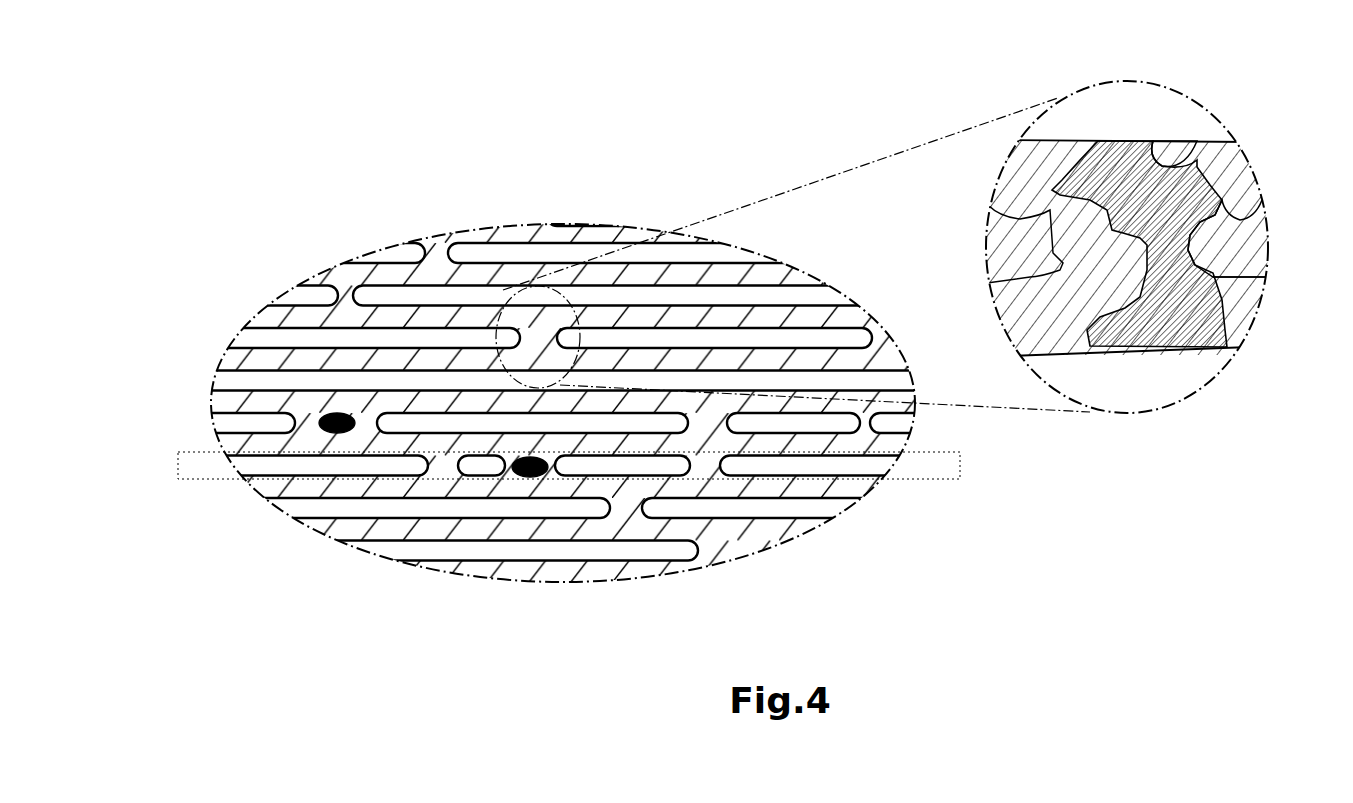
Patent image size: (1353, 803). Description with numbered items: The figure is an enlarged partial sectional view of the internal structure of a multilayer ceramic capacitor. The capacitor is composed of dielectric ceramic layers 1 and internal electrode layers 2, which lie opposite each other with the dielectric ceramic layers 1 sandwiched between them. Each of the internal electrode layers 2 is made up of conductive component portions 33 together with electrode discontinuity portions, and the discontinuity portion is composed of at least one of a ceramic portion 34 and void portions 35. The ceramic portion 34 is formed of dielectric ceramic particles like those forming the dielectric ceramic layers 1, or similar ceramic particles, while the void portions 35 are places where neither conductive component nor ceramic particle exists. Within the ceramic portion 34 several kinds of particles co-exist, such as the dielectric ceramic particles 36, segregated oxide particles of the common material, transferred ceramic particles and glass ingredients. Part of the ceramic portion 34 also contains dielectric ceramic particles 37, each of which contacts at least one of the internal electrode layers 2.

The dielectric ceramic layers 1 is at (400, 277).
The internal electrode layers 2 is at (213, 463).
The conductive component portions 33 is at (332, 340).
The ceramic portion 34 is at (742, 398).
The void portions 35 is at (332, 435).
The dielectric ceramic particles 36 is at (1228, 167).
The dielectric ceramic particles 37 is at (1087, 167).